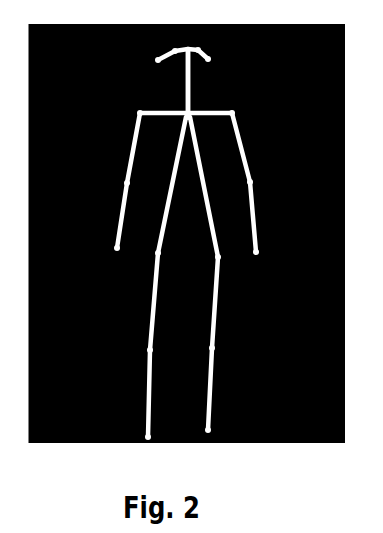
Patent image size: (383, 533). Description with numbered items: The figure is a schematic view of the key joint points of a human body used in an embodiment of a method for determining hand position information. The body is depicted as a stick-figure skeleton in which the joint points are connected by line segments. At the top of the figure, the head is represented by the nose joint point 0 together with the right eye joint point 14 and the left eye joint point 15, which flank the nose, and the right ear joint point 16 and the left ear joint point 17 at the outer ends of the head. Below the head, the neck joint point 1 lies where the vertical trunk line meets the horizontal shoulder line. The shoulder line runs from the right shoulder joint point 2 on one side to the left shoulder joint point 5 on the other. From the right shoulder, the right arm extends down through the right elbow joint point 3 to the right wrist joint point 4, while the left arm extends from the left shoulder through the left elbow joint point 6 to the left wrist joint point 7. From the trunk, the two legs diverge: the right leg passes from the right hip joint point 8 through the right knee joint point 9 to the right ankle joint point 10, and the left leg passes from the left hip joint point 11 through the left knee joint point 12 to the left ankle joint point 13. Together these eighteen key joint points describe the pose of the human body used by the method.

The nose joint point 0 is at (198, 81).
The neck joint point 1 is at (197, 126).
The right shoulder joint point 2 is at (133, 108).
The right elbow joint point 3 is at (118, 182).
The right wrist joint point 4 is at (108, 252).
The left shoulder joint point 5 is at (238, 105).
The left elbow joint point 6 is at (260, 180).
The left wrist joint point 7 is at (265, 250).
The right hip joint point 8 is at (149, 253).
The right knee joint point 9 is at (141, 350).
The right ankle joint point 10 is at (133, 435).
The left hip joint point 11 is at (228, 260).
The left knee joint point 12 is at (224, 350).
The left ankle joint point 13 is at (221, 433).
The right eye joint point 14 is at (169, 40).
The left eye joint point 15 is at (193, 39).
The right ear joint point 16 is at (146, 59).
The left ear joint point 17 is at (217, 54).